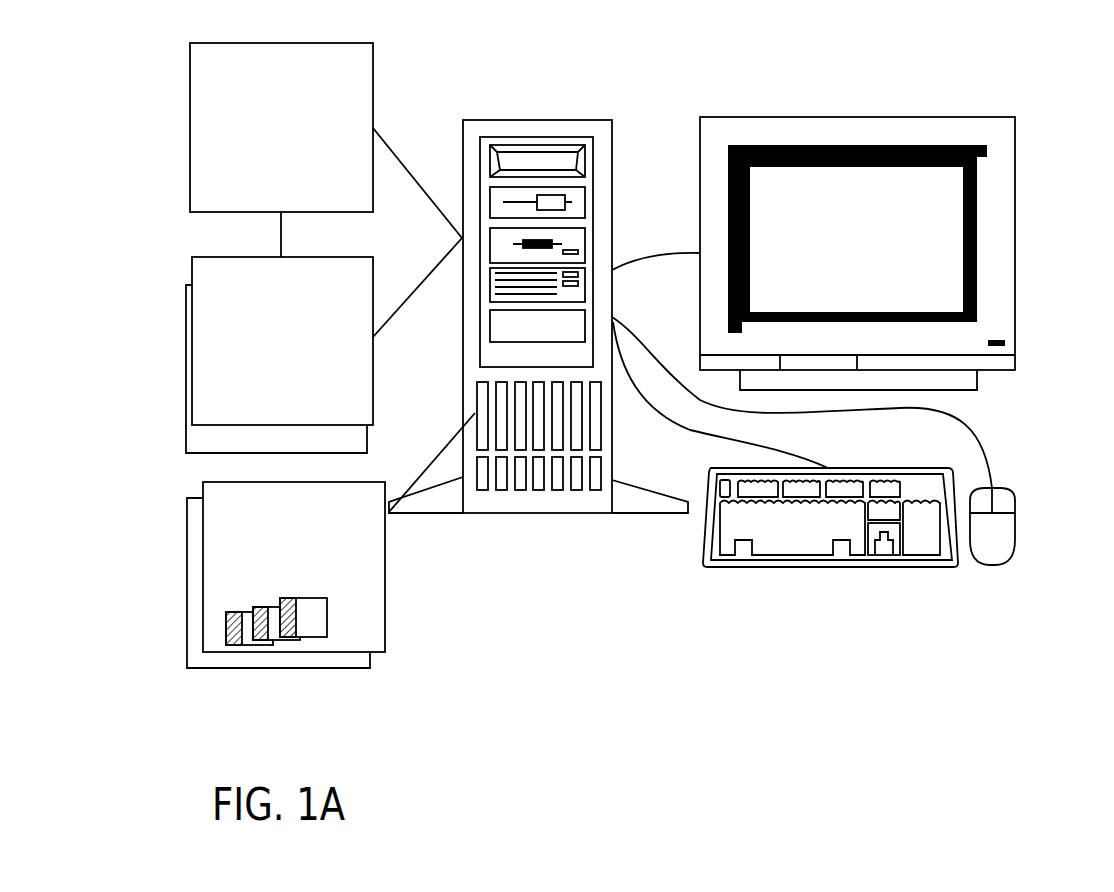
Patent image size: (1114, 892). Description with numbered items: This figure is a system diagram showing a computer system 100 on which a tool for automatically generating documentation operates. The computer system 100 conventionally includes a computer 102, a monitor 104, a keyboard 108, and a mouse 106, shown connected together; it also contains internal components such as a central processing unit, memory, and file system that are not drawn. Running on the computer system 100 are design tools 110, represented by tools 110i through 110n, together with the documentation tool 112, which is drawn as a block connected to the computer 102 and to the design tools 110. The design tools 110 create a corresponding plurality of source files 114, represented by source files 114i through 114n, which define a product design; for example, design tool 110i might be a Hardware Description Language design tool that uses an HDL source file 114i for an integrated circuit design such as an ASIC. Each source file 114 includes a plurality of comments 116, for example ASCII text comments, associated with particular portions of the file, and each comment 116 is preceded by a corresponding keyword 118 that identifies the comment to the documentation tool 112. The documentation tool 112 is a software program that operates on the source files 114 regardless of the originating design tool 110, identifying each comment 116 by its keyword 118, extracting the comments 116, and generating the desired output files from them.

The computer system 100 is at (512, 42).
The computer 102 is at (575, 118).
The monitor 104 is at (812, 117).
The mouse 106 is at (1018, 512).
The keyboard 108 is at (808, 568).
The design tools 110 is at (260, 348).
The design tool 110i is at (426, 405).
The design tool 110n is at (350, 453).
The documentation tool 112 is at (190, 125).
The source files 114 is at (277, 598).
The source file 114i is at (331, 584).
The source file 114n is at (348, 668).
The comments 116 is at (313, 613).
The keyword 118 is at (226, 612).